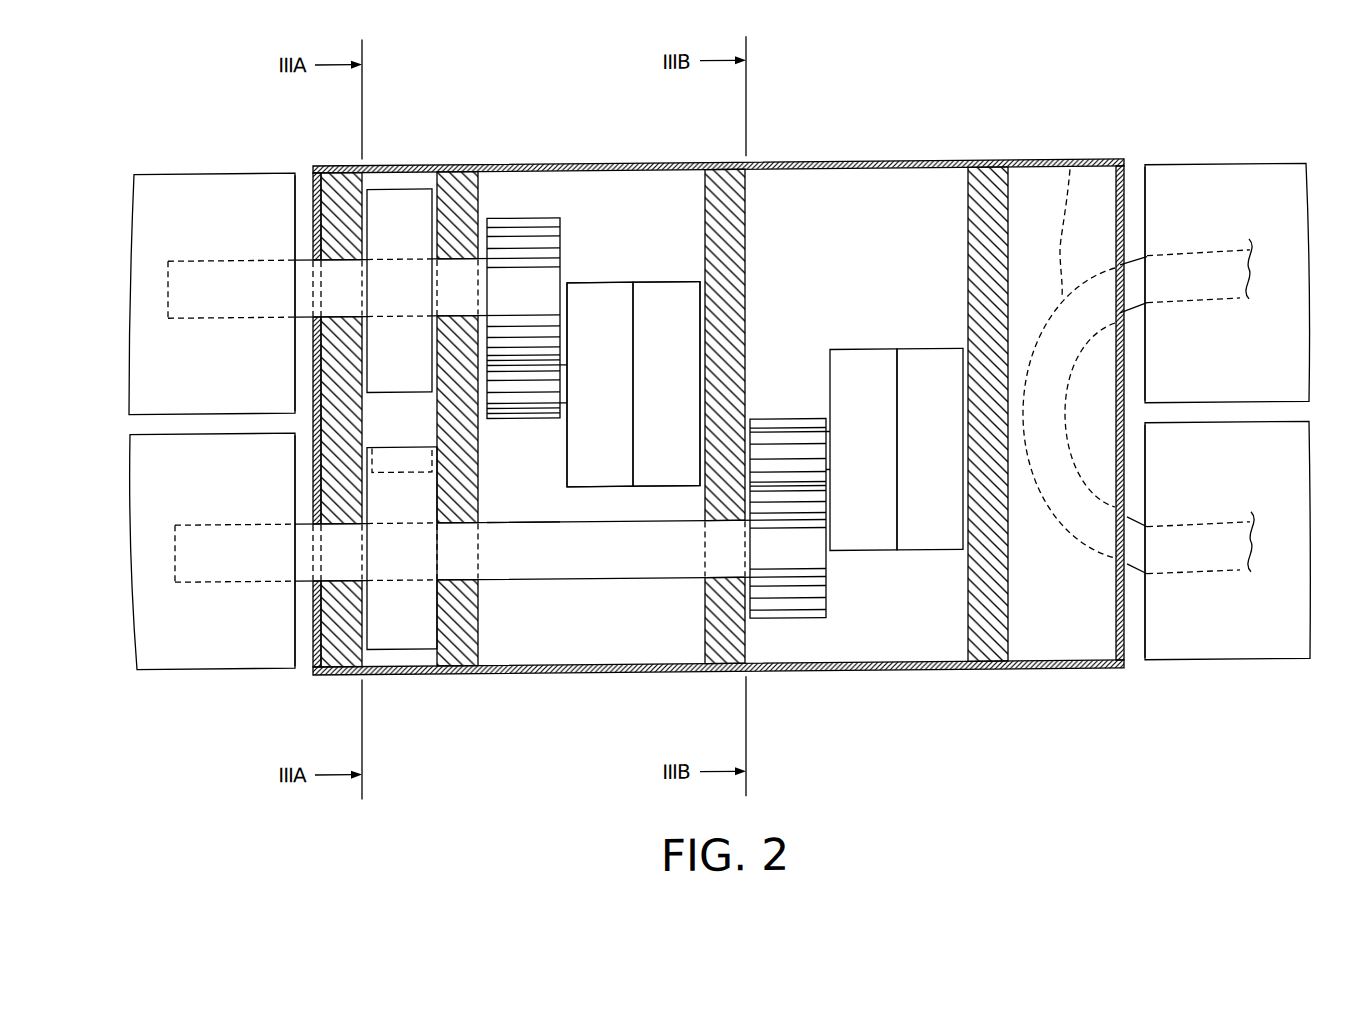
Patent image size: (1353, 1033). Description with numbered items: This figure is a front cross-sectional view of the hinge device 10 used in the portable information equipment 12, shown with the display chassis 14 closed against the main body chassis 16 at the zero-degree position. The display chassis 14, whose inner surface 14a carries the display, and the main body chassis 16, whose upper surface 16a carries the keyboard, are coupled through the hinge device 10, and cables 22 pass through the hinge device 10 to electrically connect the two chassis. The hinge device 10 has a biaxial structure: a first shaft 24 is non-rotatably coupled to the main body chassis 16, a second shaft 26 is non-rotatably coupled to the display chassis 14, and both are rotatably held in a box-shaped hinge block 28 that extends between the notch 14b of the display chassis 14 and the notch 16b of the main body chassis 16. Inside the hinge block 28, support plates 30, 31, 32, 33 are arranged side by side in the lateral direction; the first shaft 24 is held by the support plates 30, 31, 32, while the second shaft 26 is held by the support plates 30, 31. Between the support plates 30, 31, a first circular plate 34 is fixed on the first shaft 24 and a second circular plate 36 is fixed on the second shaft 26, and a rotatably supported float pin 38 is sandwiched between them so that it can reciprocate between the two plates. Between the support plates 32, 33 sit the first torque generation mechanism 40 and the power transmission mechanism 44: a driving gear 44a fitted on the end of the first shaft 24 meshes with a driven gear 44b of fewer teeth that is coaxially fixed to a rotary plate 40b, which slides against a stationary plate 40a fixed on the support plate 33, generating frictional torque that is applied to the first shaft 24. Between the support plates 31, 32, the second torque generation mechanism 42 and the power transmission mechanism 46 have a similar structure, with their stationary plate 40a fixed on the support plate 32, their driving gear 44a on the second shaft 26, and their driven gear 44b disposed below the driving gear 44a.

The hinge device 10 is at (718, 375).
The portable information equipment 12 is at (122, 83).
The display chassis 14 is at (178, 163).
The inner surface 14a is at (1203, 421).
The notch 14b is at (304, 176).
The main body chassis 16 is at (180, 681).
The upper surface 16a is at (1243, 409).
The notch 16b is at (304, 676).
The cables 22 is at (1069, 172).
The first shaft 24 is at (593, 548).
The second shaft 26 is at (397, 258).
The hinge block 28 is at (853, 676).
The support plate 30 is at (336, 167).
The support plate 31 is at (455, 173).
The support plate 32 is at (712, 173).
The support plate 33 is at (990, 186).
The first circular plate 34 is at (398, 620).
The second circular plate 36 is at (398, 352).
The float pin 38 is at (398, 420).
The first torque generation mechanism 40 is at (765, 323).
The stationary plate 40a is at (660, 285).
The rotary plate 40b is at (602, 285).
The second torque generation mechanism 42 is at (594, 213).
The power transmission mechanism 44 is at (688, 361).
The driving gear 44a is at (520, 220).
The driven gear 44b is at (522, 421).
The power transmission mechanism 46 is at (525, 478).